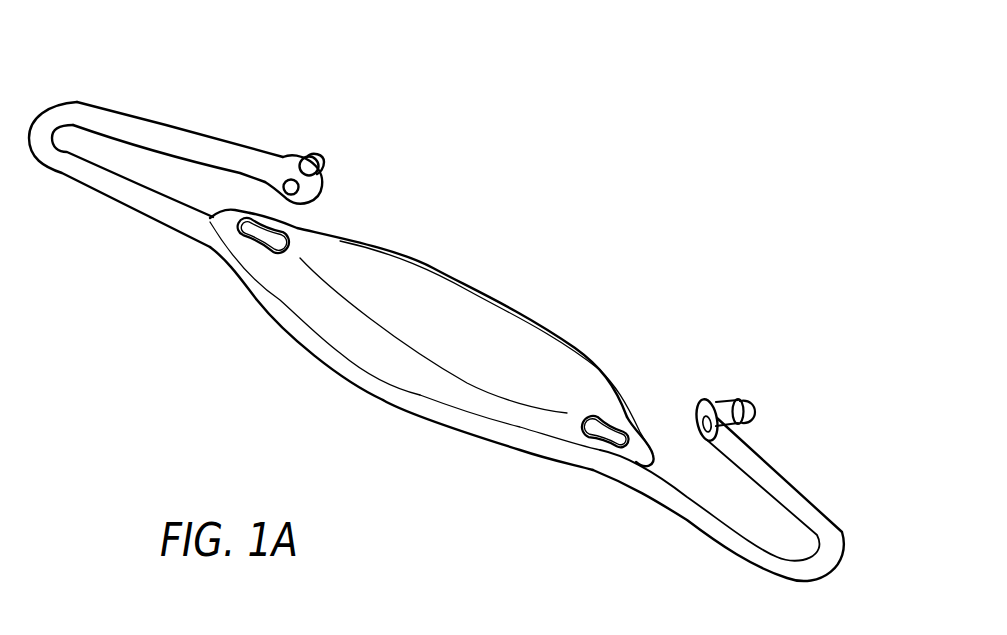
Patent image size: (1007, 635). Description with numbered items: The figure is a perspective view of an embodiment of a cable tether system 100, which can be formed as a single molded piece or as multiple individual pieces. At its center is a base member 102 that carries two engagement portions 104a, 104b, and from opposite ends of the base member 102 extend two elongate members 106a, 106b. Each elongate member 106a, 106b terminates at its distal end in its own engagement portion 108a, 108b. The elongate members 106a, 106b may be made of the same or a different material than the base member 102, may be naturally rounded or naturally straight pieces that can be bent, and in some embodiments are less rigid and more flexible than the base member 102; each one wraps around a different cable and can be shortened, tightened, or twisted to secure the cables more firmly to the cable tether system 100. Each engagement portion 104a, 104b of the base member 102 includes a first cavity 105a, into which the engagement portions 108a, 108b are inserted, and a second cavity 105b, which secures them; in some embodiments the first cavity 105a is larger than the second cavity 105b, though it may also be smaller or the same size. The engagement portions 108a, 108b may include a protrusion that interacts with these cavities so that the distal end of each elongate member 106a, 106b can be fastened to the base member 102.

The cable tether system 100 is at (587, 85).
The base member 102 is at (483, 327).
The engagement portion 104a is at (245, 239).
The engagement portion 104b is at (605, 405).
The first cavity 105a is at (290, 229).
The second cavity 105b is at (249, 222).
The elongate member 106a is at (139, 121).
The elongate member 106b is at (782, 487).
The engagement portion 108a is at (312, 156).
The engagement portion 108b is at (740, 400).